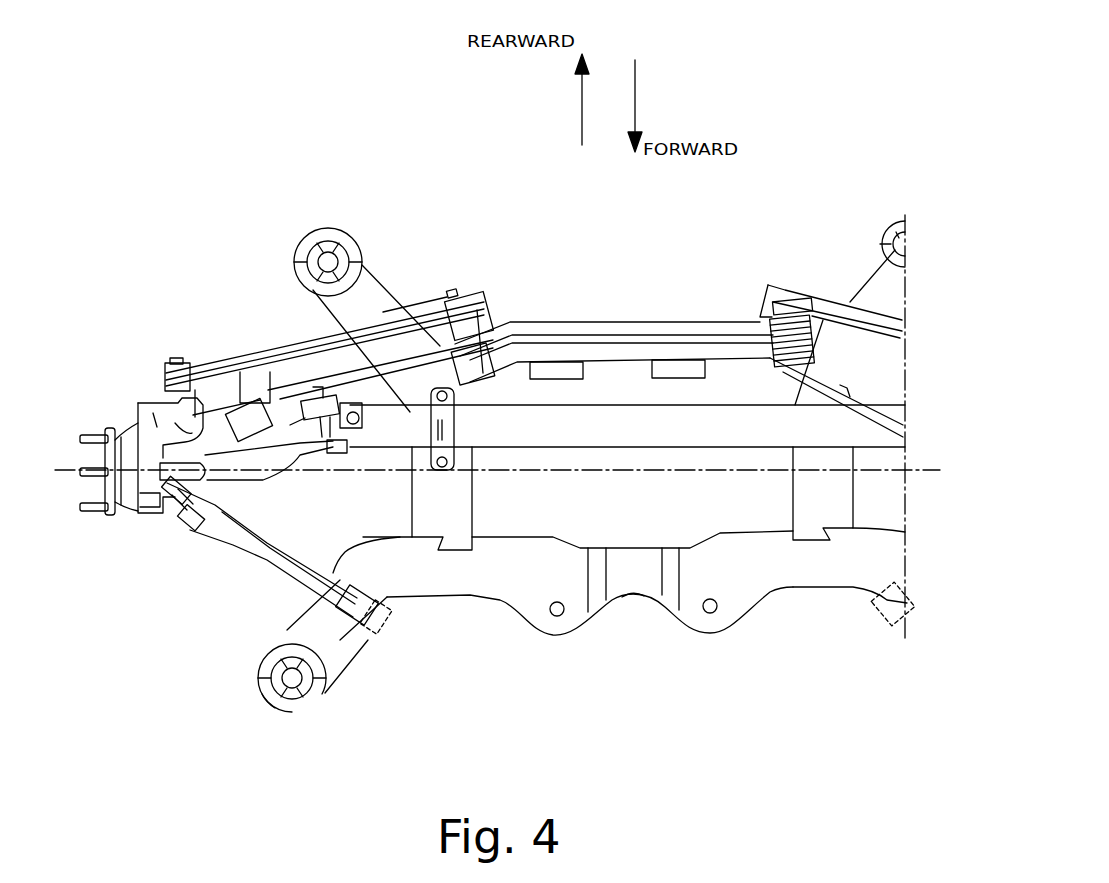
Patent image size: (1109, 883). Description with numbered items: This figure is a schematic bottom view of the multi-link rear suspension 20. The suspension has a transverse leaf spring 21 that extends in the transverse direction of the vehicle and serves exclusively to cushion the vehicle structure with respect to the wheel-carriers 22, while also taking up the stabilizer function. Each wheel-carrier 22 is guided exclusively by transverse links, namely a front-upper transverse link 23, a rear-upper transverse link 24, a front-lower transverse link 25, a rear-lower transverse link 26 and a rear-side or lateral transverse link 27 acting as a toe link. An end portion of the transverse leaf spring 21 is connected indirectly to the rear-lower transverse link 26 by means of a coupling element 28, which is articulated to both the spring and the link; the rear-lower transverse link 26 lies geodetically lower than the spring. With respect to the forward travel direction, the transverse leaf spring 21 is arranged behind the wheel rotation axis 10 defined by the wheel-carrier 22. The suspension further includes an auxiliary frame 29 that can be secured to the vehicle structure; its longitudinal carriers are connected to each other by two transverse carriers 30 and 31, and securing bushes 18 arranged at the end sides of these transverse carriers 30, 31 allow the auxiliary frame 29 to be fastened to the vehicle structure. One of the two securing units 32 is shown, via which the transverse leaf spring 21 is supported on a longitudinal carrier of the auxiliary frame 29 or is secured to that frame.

The wheel rotation axis 10 is at (710, 470).
The securing bush 18 is at (323, 235).
The multi-link rear suspension 20 is at (550, 264).
The transverse leaf spring 21 is at (612, 432).
The wheel-carrier 22 is at (138, 423).
The front-upper transverse link 23 is at (283, 557).
The rear-upper transverse link 24 is at (300, 457).
The front-lower transverse link 25 is at (218, 533).
The rear-lower transverse link 26 is at (397, 365).
The lateral transverse link 27 is at (243, 362).
The coupling element 28 is at (312, 390).
The auxiliary frame 29 is at (632, 595).
The transverse carrier 30 is at (516, 585).
The transverse carrier 31 is at (583, 335).
The securing unit 32 is at (445, 425).